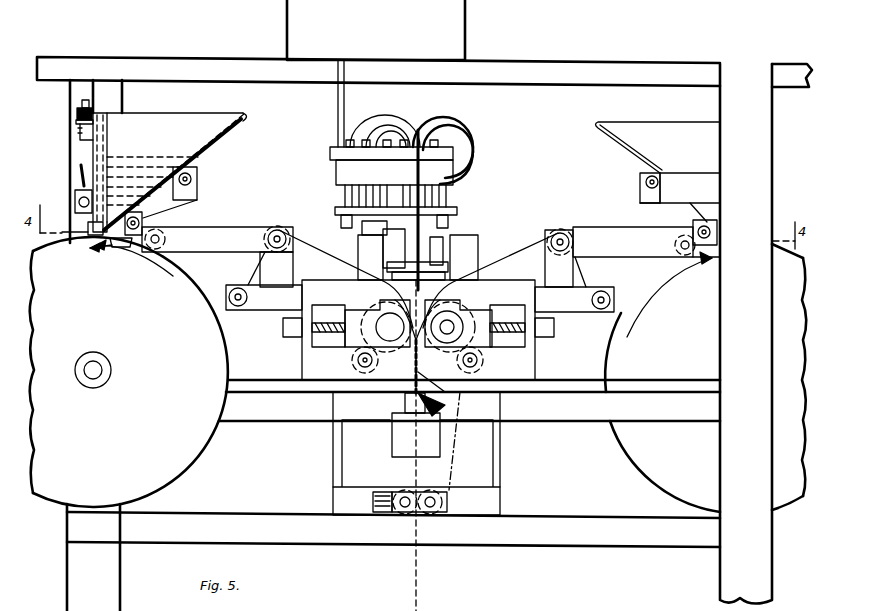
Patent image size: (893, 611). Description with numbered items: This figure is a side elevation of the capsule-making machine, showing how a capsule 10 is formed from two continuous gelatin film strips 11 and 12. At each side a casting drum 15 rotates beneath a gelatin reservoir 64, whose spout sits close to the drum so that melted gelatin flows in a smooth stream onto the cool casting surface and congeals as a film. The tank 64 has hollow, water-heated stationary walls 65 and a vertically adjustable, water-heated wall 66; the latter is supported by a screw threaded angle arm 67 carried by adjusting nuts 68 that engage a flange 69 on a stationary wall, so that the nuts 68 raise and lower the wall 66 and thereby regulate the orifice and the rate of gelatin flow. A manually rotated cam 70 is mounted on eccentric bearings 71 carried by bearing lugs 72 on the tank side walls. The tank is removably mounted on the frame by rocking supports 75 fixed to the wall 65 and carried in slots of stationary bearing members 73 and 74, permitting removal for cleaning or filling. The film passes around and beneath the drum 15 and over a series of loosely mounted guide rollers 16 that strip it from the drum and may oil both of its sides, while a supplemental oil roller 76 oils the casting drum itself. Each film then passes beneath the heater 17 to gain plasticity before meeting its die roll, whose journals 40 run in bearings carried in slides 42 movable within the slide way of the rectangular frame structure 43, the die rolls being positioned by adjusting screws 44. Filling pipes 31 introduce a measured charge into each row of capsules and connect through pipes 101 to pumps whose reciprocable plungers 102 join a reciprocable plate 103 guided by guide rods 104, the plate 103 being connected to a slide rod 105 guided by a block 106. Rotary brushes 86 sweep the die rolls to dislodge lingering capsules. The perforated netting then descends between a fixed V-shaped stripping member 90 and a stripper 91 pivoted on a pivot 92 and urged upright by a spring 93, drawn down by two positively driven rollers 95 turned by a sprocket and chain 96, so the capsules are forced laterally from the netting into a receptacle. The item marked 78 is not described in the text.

The capsule 10 is at (414, 362).
The gelatin film strip 11 is at (305, 247).
The gelatin film strip 12 is at (527, 258).
The casting drum 15 is at (418, 374).
The guide and oiling roll 16 is at (275, 229).
The heater 17 is at (418, 257).
The filling pipe 31 is at (417, 313).
The journal 40 is at (418, 327).
The slide 42 is at (357, 350).
The rectangular frame structure 43 is at (535, 372).
The adjusting screw 44 is at (292, 338).
The reservoir 64 is at (185, 118).
The stationary wall 65 is at (232, 128).
The vertically adjustable wall 66 is at (96, 150).
The screw threaded angle arm 67 is at (78, 134).
The adjusting nut 68 is at (76, 113).
The flange 69 is at (91, 114).
The manually rotated cam 70 is at (75, 203).
The eccentric bearing 71 is at (88, 226).
The bearing lug 72 is at (67, 222).
The stationary bearing member 73 is at (197, 188).
The stationary bearing member 74 is at (143, 222).
The rocking support 75 is at (192, 178).
The supplemental oil roller 76 is at (167, 239).
The lever 78 is at (111, 243).
The rotary brush 86 is at (358, 366).
The V shaped stripping member 90 is at (406, 398).
The stripper 91 is at (435, 384).
The pivot 92 is at (416, 435).
The spring 93 is at (438, 404).
The positively driven roller 95 is at (405, 513).
The sprocket and chain 96 is at (452, 462).
The pipe 101 is at (425, 120).
The reciprocable plunger 102 is at (391, 162).
The reciprocable plate 103 is at (457, 211).
The guide rod 104 is at (342, 198).
The slide rod 105 is at (375, 227).
The block 106 is at (397, 248).